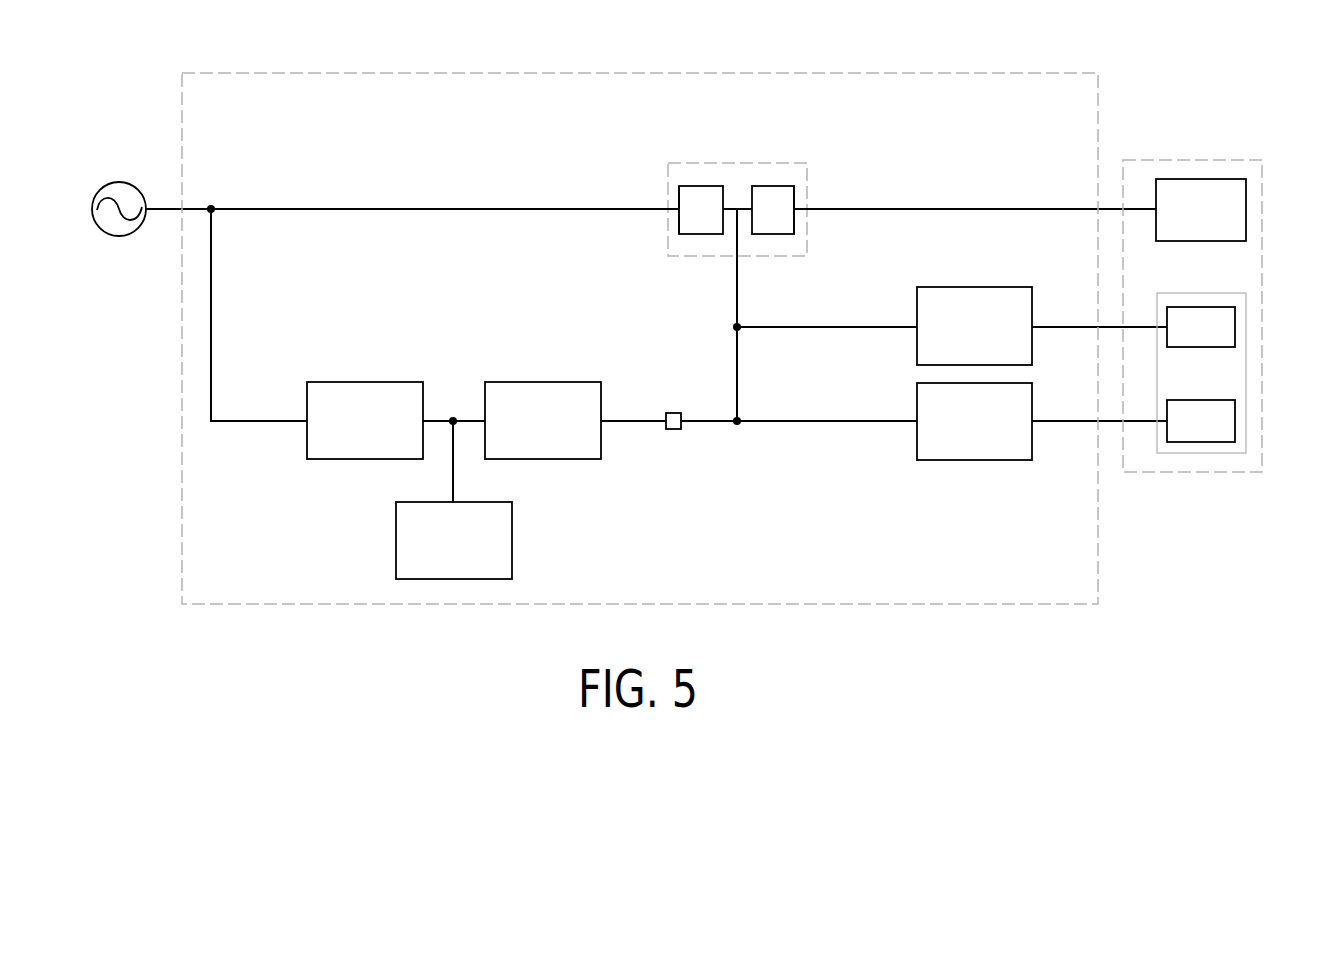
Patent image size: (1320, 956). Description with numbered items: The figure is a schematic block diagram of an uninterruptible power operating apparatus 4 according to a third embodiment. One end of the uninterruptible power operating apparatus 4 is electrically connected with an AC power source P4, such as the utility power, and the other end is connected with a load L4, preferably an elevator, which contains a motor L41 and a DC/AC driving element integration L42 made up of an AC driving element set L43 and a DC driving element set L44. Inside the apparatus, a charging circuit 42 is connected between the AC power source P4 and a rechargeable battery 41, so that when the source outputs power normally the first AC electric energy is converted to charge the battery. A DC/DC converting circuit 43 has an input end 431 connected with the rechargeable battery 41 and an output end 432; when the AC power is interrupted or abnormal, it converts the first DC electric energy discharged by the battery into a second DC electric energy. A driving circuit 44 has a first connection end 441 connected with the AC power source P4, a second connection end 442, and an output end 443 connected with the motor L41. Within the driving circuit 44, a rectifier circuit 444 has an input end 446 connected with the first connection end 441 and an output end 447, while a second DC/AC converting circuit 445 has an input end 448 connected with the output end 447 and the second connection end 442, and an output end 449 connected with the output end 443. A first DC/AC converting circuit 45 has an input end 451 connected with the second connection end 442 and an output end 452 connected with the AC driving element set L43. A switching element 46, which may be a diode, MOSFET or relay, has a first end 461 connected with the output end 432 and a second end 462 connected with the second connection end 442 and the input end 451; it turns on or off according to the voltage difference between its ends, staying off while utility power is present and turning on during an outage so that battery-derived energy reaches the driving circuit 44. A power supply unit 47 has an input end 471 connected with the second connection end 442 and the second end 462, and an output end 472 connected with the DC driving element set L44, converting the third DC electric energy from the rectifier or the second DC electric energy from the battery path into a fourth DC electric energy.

The uninterruptible power operating apparatus 4 is at (1072, 73).
The AC power source P4 is at (118, 182).
The rechargeable battery 41 is at (512, 530).
The charging circuit 42 is at (365, 382).
The DC/DC converting circuit 43 is at (543, 382).
The input end 431 is at (485, 420).
The output end 432 is at (601, 422).
The driving circuit 44 is at (807, 195).
The first connection end 441 is at (670, 212).
The second connection end 442 is at (737, 257).
The output end 443 is at (807, 213).
The rectifier circuit 444 is at (703, 186).
The second DC/AC converting circuit 445 is at (773, 186).
The input end 446 is at (679, 198).
The output end 447 is at (725, 208).
The input end 448 is at (747, 213).
The output end 449 is at (797, 208).
The first DC/AC converting circuit 45 is at (975, 287).
The input end 451 is at (917, 328).
The output end 452 is at (1032, 328).
The switching element 46 is at (677, 413).
The first end 461 is at (665, 423).
The second end 462 is at (683, 425).
The power supply unit 47 is at (973, 460).
The input end 471 is at (917, 422).
The output end 472 is at (1032, 422).
The load L4 is at (1192, 160).
The motor L41 is at (1246, 210).
The DC/AC driving element integration L42 is at (1246, 378).
The AC driving element set L43 is at (1235, 325).
The DC driving element set L44 is at (1235, 425).